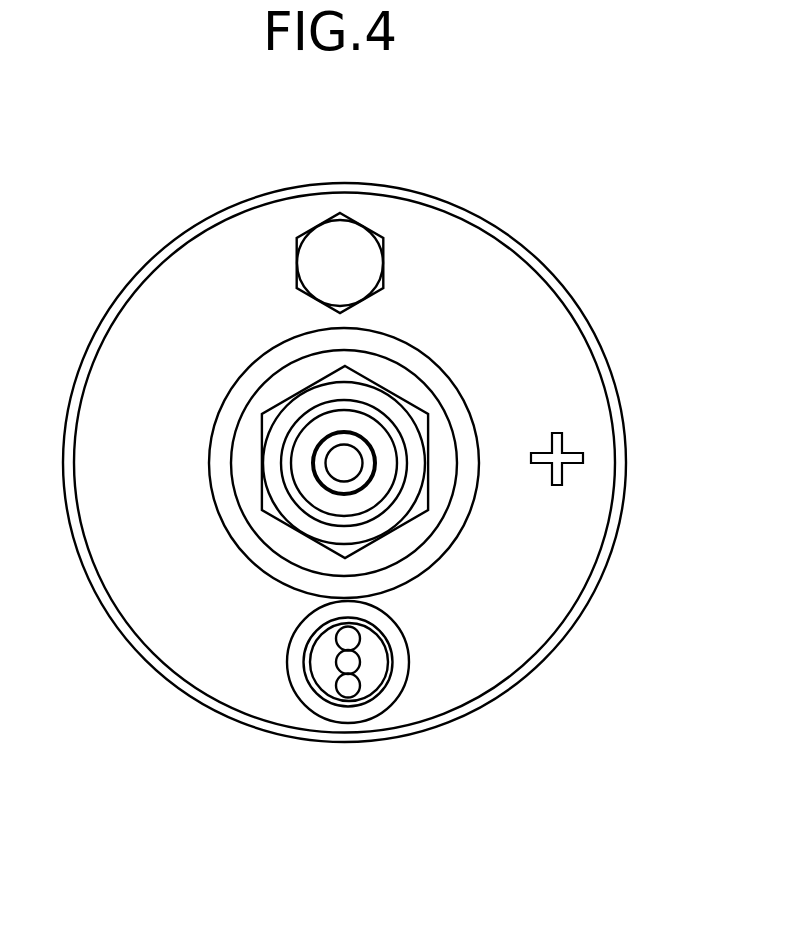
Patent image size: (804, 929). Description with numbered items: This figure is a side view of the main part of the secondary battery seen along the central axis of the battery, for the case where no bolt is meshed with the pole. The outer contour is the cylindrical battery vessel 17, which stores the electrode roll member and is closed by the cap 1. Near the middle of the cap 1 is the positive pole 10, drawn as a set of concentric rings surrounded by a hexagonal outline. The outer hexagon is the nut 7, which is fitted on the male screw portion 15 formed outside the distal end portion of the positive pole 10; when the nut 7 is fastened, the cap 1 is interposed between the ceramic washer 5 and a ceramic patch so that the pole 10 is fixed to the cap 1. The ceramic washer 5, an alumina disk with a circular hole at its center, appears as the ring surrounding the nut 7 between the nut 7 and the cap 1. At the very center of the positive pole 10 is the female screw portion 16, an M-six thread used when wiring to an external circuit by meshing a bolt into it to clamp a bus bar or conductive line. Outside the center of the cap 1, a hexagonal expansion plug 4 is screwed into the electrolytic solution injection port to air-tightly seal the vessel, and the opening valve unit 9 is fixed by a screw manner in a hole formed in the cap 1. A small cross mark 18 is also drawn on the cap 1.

The cap 1 is at (487, 247).
The expansion plug 4 is at (333, 236).
The ceramic washer 5 is at (257, 372).
The nut 7 is at (344, 378).
The opening valve unit 9 is at (382, 703).
The positive pole 10 is at (363, 502).
The male screw portion 15 is at (388, 500).
The female screw portion 16 is at (317, 480).
The battery vessel 17 is at (433, 193).
The alignment mark 18 is at (572, 465).